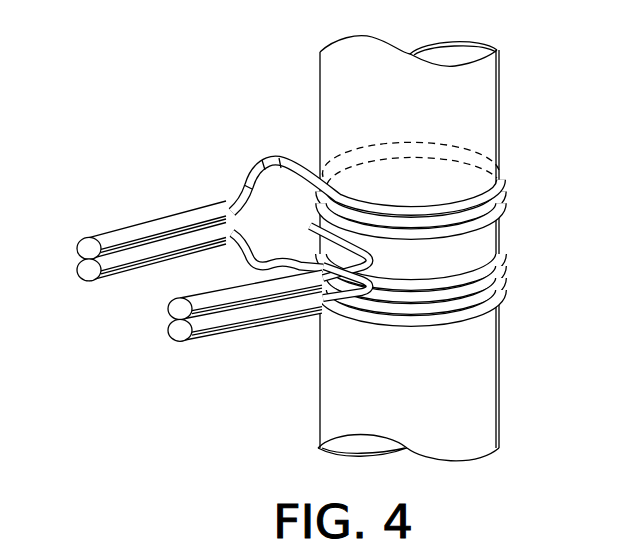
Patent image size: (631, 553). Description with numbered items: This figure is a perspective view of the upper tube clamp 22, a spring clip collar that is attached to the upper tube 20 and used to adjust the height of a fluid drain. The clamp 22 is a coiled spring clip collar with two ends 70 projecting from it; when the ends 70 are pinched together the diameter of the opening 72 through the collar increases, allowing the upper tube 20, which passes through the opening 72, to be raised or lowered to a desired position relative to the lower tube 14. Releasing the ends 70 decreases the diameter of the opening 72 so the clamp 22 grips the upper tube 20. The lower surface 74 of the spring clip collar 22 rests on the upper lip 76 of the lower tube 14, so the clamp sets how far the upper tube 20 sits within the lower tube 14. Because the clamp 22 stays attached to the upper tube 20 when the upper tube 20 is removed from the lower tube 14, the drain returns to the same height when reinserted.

The lower tube 14 is at (333, 402).
The upper tube 20 is at (338, 83).
The upper tube clamp 22 is at (248, 167).
The ends 70 is at (177, 322).
The opening 72 is at (468, 173).
The lower surface 74 is at (505, 290).
The upper lip 76 is at (477, 315).